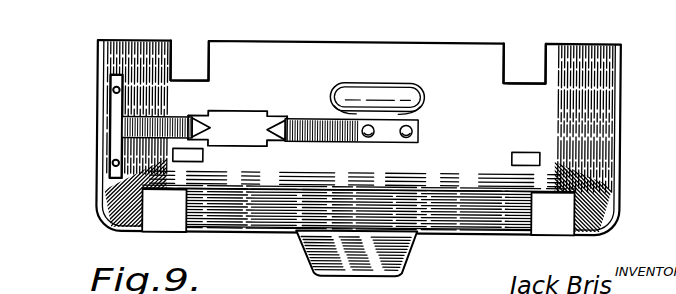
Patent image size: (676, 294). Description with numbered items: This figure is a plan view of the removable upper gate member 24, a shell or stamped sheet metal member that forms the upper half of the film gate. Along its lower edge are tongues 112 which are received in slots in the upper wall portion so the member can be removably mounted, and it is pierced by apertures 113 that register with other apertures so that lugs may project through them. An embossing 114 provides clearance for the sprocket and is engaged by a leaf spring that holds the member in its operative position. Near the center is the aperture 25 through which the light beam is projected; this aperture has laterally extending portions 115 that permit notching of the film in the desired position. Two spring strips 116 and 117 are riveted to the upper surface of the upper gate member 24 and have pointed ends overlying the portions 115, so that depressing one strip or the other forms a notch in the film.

The upper gate member 24 is at (622, 153).
The aperture 25 is at (243, 112).
The tongues 112 is at (187, 212).
The apertures 113 is at (203, 157).
The embossing 114 is at (387, 92).
The laterally extending portions 115 is at (195, 53).
The spring strip 116 is at (172, 106).
The spring strip 117 is at (316, 118).